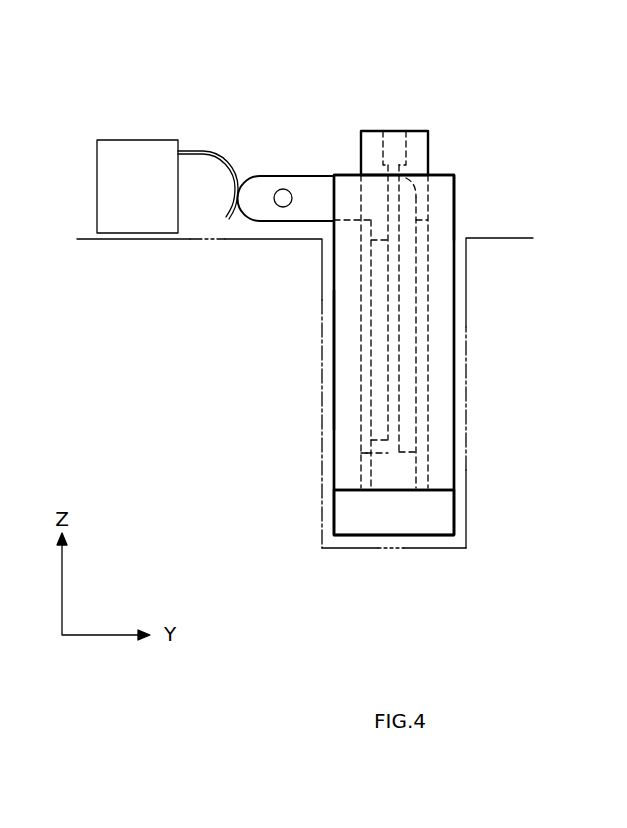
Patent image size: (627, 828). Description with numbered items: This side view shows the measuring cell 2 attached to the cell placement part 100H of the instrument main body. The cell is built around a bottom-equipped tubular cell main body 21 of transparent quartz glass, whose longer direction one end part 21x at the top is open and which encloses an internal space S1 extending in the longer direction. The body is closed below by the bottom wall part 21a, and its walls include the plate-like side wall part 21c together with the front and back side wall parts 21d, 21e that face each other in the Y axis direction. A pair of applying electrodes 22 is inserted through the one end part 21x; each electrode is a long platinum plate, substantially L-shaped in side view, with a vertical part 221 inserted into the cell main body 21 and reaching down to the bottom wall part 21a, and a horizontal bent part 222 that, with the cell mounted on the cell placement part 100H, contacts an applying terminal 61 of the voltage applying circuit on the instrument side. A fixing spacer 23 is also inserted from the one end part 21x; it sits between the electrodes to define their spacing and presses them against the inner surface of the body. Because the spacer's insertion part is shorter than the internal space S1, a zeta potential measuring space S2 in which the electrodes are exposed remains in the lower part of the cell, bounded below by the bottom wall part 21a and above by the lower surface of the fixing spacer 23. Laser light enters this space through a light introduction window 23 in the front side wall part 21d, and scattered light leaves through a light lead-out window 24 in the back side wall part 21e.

The measuring cell 2 is at (316, 60).
The cell main body 21 is at (455, 355).
The bottom wall part 21a is at (423, 537).
The right side wall part 21c is at (333, 368).
The front side wall part 21d is at (358, 380).
The back side wall part 21e is at (430, 408).
The longer direction one end part 21x is at (478, 185).
The applying electrode 22 is at (290, 175).
The vertical part 221 is at (358, 458).
The horizontal part 222 is at (312, 226).
The fixing spacer 23 is at (418, 130).
The light lead-out window 24 is at (441, 478).
The applying terminal 61 is at (203, 150).
The cell placement part 100H is at (472, 285).
The internal space S1 is at (390, 332).
The zeta potential measuring space S2 is at (394, 481).